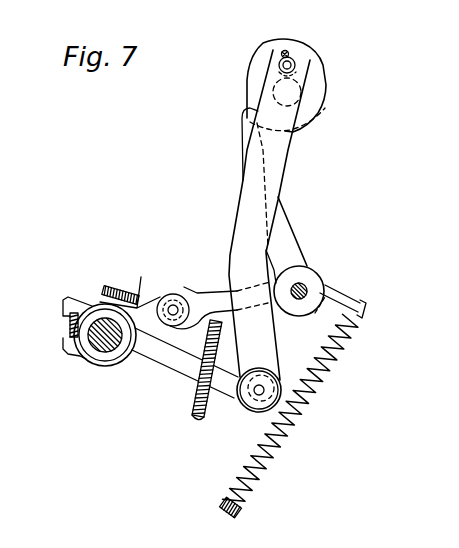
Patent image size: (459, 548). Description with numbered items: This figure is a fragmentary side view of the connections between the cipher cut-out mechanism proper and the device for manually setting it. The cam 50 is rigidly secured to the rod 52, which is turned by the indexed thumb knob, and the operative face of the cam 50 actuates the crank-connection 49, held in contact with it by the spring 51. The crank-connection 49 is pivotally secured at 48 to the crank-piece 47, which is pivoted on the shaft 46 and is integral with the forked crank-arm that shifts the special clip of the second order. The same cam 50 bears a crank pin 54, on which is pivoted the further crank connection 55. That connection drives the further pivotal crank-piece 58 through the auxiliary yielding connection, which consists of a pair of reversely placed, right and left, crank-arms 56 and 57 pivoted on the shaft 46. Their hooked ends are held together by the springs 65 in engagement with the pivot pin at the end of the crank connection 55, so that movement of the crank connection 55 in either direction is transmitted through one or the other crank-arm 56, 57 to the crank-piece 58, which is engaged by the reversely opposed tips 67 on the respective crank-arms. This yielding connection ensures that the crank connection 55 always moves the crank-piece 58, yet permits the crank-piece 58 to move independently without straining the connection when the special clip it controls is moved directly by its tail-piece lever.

The shaft 46 is at (100, 350).
The crank-piece 47 is at (116, 291).
The pivot 48 is at (175, 304).
The crank-connection 49 is at (285, 228).
The cam 50 is at (246, 70).
The spring 51 is at (310, 393).
The rod 52 is at (325, 108).
The crank pin 54 is at (292, 60).
The crank connection 55 is at (290, 157).
The crank-arm 56 is at (167, 363).
The crank-arm 57 is at (196, 395).
The crank-piece 58 is at (70, 323).
The springs 65 is at (200, 418).
The tips 67 is at (78, 300).